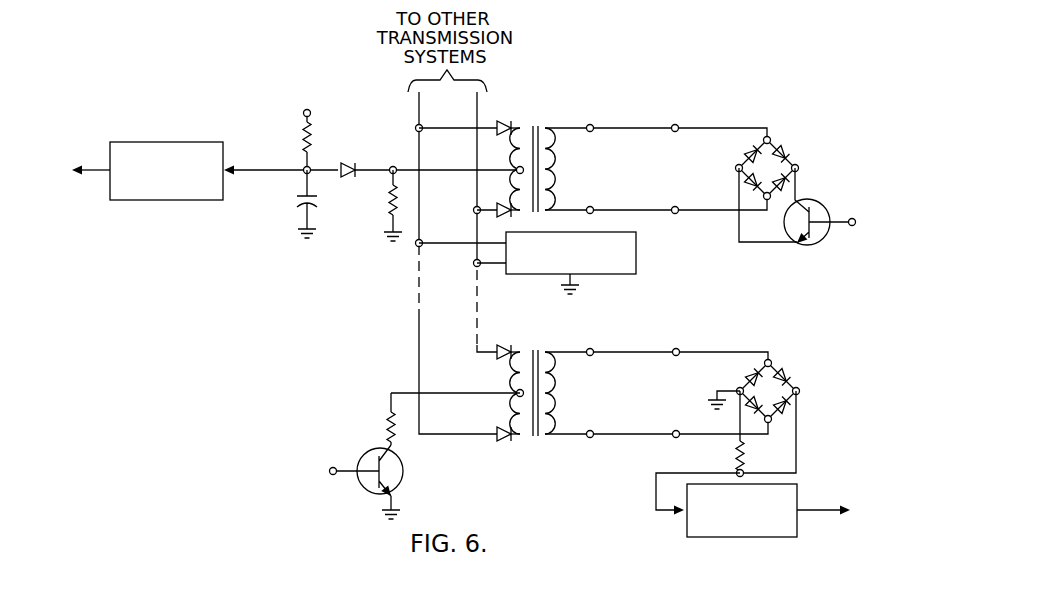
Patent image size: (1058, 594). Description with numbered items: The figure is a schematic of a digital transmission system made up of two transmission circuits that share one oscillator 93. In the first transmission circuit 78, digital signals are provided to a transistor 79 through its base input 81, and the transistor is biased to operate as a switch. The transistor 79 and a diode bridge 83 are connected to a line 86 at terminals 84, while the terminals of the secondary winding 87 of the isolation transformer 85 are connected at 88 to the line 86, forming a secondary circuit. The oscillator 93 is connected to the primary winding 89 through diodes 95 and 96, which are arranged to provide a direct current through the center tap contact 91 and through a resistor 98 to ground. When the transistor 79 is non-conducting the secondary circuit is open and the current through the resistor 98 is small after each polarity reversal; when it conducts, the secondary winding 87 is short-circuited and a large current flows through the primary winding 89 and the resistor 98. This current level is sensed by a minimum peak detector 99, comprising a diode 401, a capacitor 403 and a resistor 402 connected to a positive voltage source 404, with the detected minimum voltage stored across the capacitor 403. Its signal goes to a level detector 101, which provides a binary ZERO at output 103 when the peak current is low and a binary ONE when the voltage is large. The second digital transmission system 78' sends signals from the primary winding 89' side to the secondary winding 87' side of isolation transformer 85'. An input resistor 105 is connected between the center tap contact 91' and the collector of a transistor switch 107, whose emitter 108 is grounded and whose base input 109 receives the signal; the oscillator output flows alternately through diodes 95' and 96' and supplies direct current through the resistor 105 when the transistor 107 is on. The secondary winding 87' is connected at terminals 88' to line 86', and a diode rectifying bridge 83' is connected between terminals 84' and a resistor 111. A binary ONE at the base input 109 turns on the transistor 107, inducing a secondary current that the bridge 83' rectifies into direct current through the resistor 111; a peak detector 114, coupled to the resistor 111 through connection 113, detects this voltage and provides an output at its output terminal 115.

The level detector 101 is at (149, 142).
The output 103 is at (100, 168).
The minimum peak detector 99 is at (317, 156).
The diode 401 is at (348, 162).
The positive voltage source 404 is at (303, 118).
The resistor 402 is at (303, 142).
The capacitor 403 is at (299, 200).
The resistor 98 is at (387, 202).
The oscillator 93 is at (636, 250).
The diode 95 is at (501, 113).
The diode 96 is at (500, 223).
The primary winding 89 is at (500, 148).
The center tap contact 91 is at (502, 189).
The isolation transformer 85 is at (547, 154).
The secondary winding 87 is at (560, 169).
The line 86 is at (656, 164).
The terminals 88 is at (590, 165).
The terminals 84 is at (673, 166).
The diode bridge 83 is at (772, 158).
The transmission circuit 78 is at (741, 212).
The transistor 79 is at (806, 199).
The base input 81 is at (851, 218).
The diode 95' is at (499, 338).
The diode 96' is at (487, 443).
The primary winding 89' is at (489, 372).
The center tap contact 91' is at (496, 412).
The isolation transformer 85' is at (547, 376).
The secondary winding 87' is at (561, 392).
The line 86' is at (656, 385).
The terminals 88' is at (579, 385).
The terminals 84' is at (688, 387).
The diode rectifying bridge 83' is at (773, 381).
The second digital transmission system 78' is at (700, 435).
The resistor 111 is at (748, 459).
The connection 113 is at (656, 513).
The peak detector 114 is at (797, 494).
The output terminal 115 is at (815, 512).
The input resistor 105 is at (382, 421).
The transistor switch 107 is at (368, 453).
The base input 109 is at (330, 471).
The emitter 108 is at (398, 505).